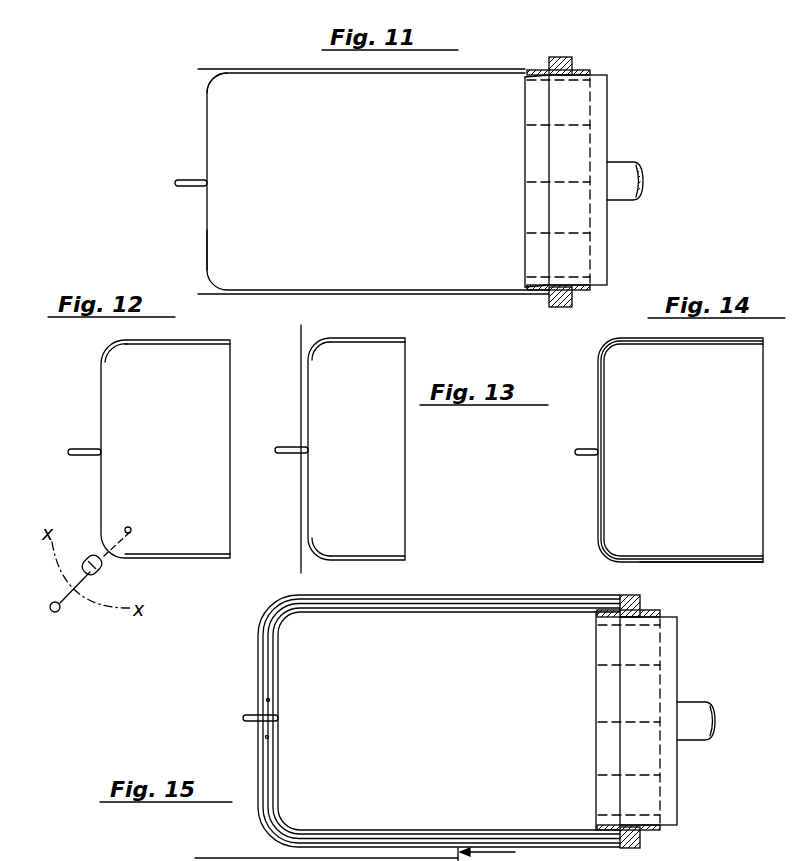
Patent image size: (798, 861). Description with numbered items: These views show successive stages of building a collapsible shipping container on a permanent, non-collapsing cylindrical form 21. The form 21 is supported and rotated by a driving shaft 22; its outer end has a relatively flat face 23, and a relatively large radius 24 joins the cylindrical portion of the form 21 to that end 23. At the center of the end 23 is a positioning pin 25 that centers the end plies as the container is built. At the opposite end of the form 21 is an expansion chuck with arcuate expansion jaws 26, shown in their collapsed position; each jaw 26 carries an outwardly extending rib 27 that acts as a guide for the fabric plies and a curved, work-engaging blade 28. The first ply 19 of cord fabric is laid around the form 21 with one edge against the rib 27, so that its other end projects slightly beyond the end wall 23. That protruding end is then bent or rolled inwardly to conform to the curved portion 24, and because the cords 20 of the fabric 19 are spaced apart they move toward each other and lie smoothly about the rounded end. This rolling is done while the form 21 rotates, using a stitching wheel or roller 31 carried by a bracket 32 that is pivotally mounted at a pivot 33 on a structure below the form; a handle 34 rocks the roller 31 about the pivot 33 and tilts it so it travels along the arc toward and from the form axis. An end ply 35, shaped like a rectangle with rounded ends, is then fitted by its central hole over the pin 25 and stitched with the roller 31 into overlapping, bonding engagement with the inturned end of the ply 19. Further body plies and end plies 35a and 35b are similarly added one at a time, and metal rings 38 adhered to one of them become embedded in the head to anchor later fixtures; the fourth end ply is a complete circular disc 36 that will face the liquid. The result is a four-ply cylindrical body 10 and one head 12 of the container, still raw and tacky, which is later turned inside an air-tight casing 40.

In FIG. 15, the cylindrical body 10 is at (450, 694).
In FIG. 15, the head 12 is at (401, 721).
In FIG. 11, the first ply 19 is at (233, 70).
In FIG. 14, the first ply 19 is at (693, 566).
In FIG. 15, the cords 20 is at (500, 854).
In FIG. 11, the cylindrical form 21 is at (378, 181).
In FIG. 12, the cylindrical form 21 is at (228, 500).
In FIG. 13, the cylindrical form 21 is at (400, 493).
In FIG. 14, the cylindrical form 21 is at (680, 450).
In FIG. 11, the driving shaft 22 is at (634, 163).
In FIG. 11, the flat face 23 is at (207, 247).
In FIG. 11, the radius 24 is at (217, 78).
In FIG. 11, the positioning pin 25 is at (175, 184).
In FIG. 12, the positioning pin 25 is at (80, 447).
In FIG. 13, the positioning pin 25 is at (283, 446).
In FIG. 14, the positioning pin 25 is at (580, 458).
In FIG. 15, the positioning pin 25 is at (246, 717).
In FIG. 11, the expansion jaws 26 is at (592, 136).
In FIG. 15, the expansion jaws 26 is at (662, 681).
In FIG. 11, the rib 27 is at (566, 56).
In FIG. 11, the work-engaging blade 28 is at (532, 80).
In FIG. 12, the stitching wheel 31 is at (94, 577).
In FIG. 12, the bracket 32 is at (133, 534).
In FIG. 12, the pivot 33 is at (130, 526).
In FIG. 12, the handle 34 is at (52, 613).
In FIG. 13, the end ply 35 is at (300, 338).
In FIG. 14, the end ply 35 is at (600, 519).
In FIG. 15, the end ply 35 is at (446, 721).
In FIG. 15, the end ply 35a is at (270, 690).
In FIG. 15, the end ply 35b is at (268, 758).
In FIG. 15, the disc 36 is at (263, 788).
In FIG. 15, the metal rings 38 is at (265, 738).
In FIG. 15, the air-tight casing 40 is at (314, 850).